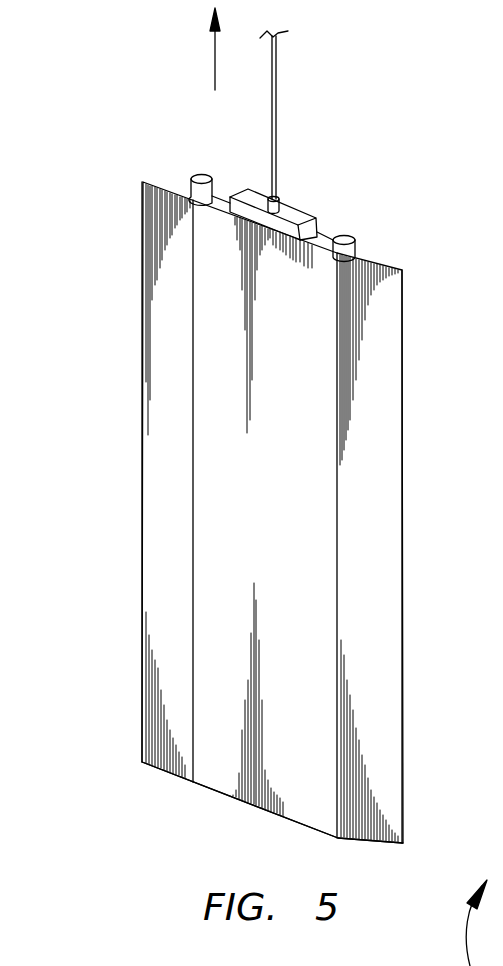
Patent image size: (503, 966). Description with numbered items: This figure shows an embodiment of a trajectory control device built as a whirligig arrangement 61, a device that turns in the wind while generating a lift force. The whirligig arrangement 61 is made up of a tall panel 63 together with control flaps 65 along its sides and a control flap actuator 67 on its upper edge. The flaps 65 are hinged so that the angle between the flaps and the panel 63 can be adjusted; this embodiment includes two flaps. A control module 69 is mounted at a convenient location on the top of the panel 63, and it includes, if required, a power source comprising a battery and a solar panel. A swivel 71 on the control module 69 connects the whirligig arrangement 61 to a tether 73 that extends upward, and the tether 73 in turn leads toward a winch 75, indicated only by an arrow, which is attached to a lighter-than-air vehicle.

The whirligig arrangement 61 is at (127, 486).
The panel 63 is at (223, 772).
The control flap 65 is at (165, 400).
The control flap actuator 67 is at (348, 234).
The control module 69 is at (305, 220).
The swivel 71 is at (278, 199).
The tether 73 is at (278, 80).
The winch 75 is at (212, 67).